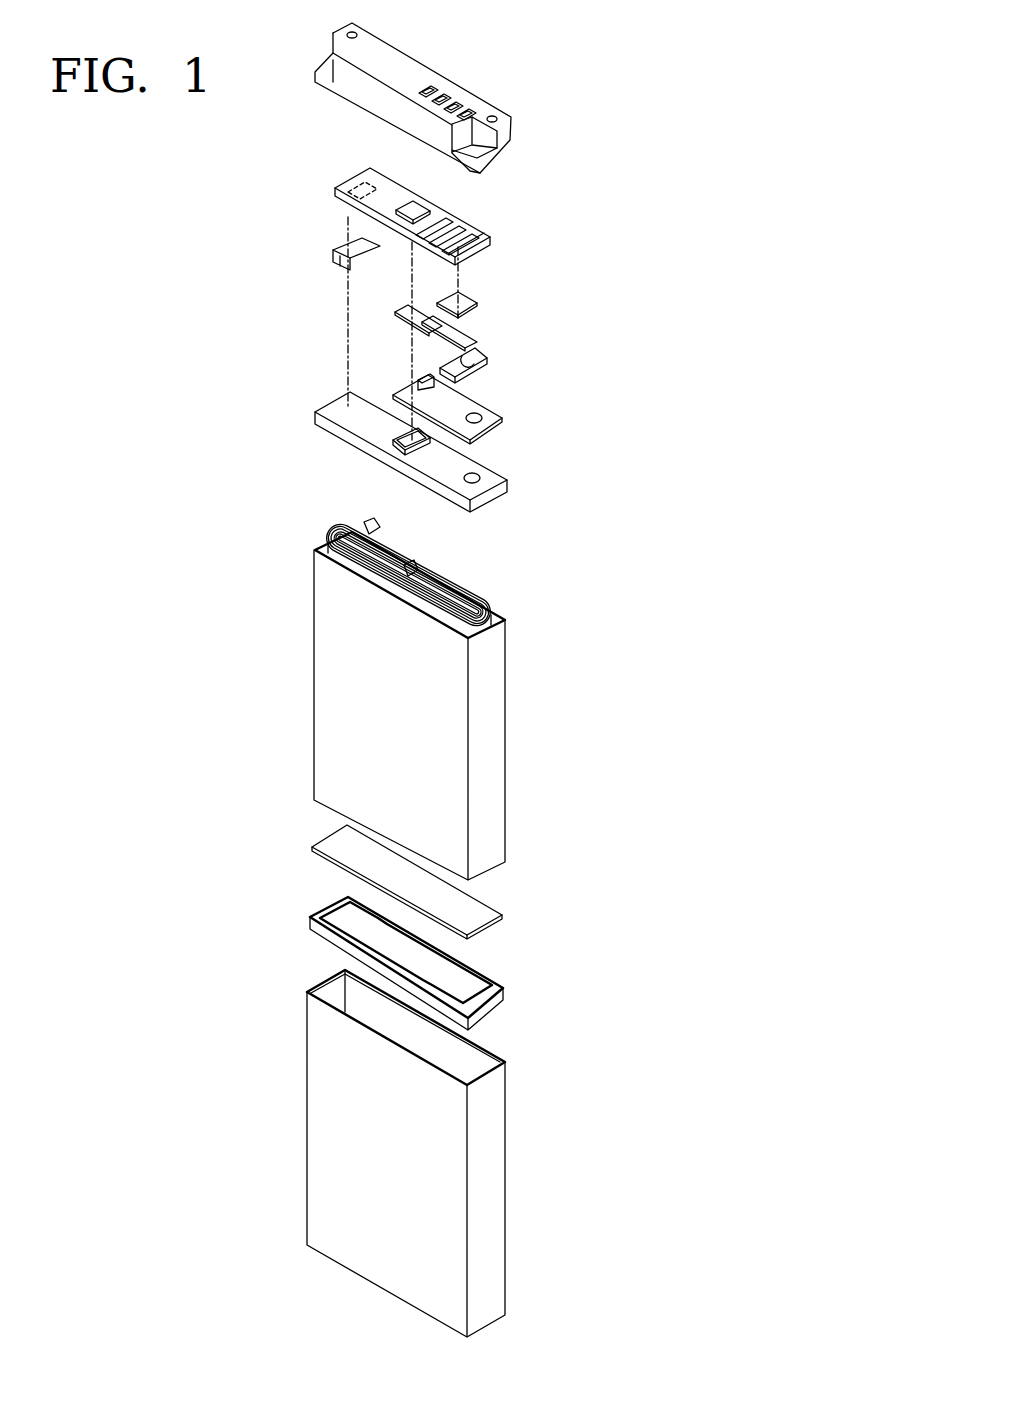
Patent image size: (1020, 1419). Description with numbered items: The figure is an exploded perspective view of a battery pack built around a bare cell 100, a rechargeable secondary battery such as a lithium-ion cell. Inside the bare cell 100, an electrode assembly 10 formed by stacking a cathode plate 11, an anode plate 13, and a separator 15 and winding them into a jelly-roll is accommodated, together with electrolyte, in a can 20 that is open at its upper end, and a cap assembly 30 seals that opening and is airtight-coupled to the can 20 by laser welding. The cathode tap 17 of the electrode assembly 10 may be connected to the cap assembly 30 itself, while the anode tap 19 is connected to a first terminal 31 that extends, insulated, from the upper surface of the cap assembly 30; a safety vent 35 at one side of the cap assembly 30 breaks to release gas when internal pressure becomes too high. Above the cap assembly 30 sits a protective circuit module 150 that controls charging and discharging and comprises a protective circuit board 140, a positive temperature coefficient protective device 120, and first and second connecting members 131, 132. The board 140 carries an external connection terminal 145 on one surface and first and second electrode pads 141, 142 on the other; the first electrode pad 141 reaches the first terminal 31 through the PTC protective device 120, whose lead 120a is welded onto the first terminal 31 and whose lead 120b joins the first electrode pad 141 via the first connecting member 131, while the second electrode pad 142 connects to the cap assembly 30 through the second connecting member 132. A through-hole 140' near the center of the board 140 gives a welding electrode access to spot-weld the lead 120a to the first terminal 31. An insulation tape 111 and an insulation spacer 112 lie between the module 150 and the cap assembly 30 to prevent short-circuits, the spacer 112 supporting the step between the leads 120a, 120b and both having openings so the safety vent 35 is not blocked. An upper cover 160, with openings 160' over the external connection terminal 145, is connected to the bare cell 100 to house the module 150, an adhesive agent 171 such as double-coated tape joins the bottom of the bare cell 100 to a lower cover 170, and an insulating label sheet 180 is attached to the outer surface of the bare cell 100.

The bare cell 100 is at (623, 490).
The electrode assembly 10 is at (472, 562).
The cathode plate 11 is at (489, 608).
The anode plate 13 is at (489, 606).
The separator 15 is at (489, 607).
The cathode tap 17 is at (368, 521).
The anode tap 19 is at (418, 562).
The can 20 is at (487, 738).
The cap assembly 30 is at (447, 475).
The first terminal 31 is at (392, 437).
The safety vent 35 is at (475, 484).
The insulation tape 111 is at (500, 430).
The insulation spacer 112 is at (490, 363).
The positive temperature coefficient (PTC) protective device 120 is at (422, 342).
The lead 120a is at (397, 314).
The lead 120b is at (440, 343).
The first connecting member 131 is at (478, 307).
The second connecting member 132 is at (337, 252).
The protective circuit board 140 is at (452, 216).
The through-hole 140' is at (380, 172).
The first electrode pad 141 is at (440, 252).
The second electrode pad 142 is at (357, 185).
The external connection terminal 145 is at (483, 230).
The protective circuit module (PCM) 150 is at (578, 240).
The upper cover 160 is at (413, 88).
The terminal openings of top holder 160' is at (459, 78).
The lower cover 170 is at (503, 1000).
The adhesive agent 171 is at (502, 917).
The insulating label sheet 180 is at (487, 1172).